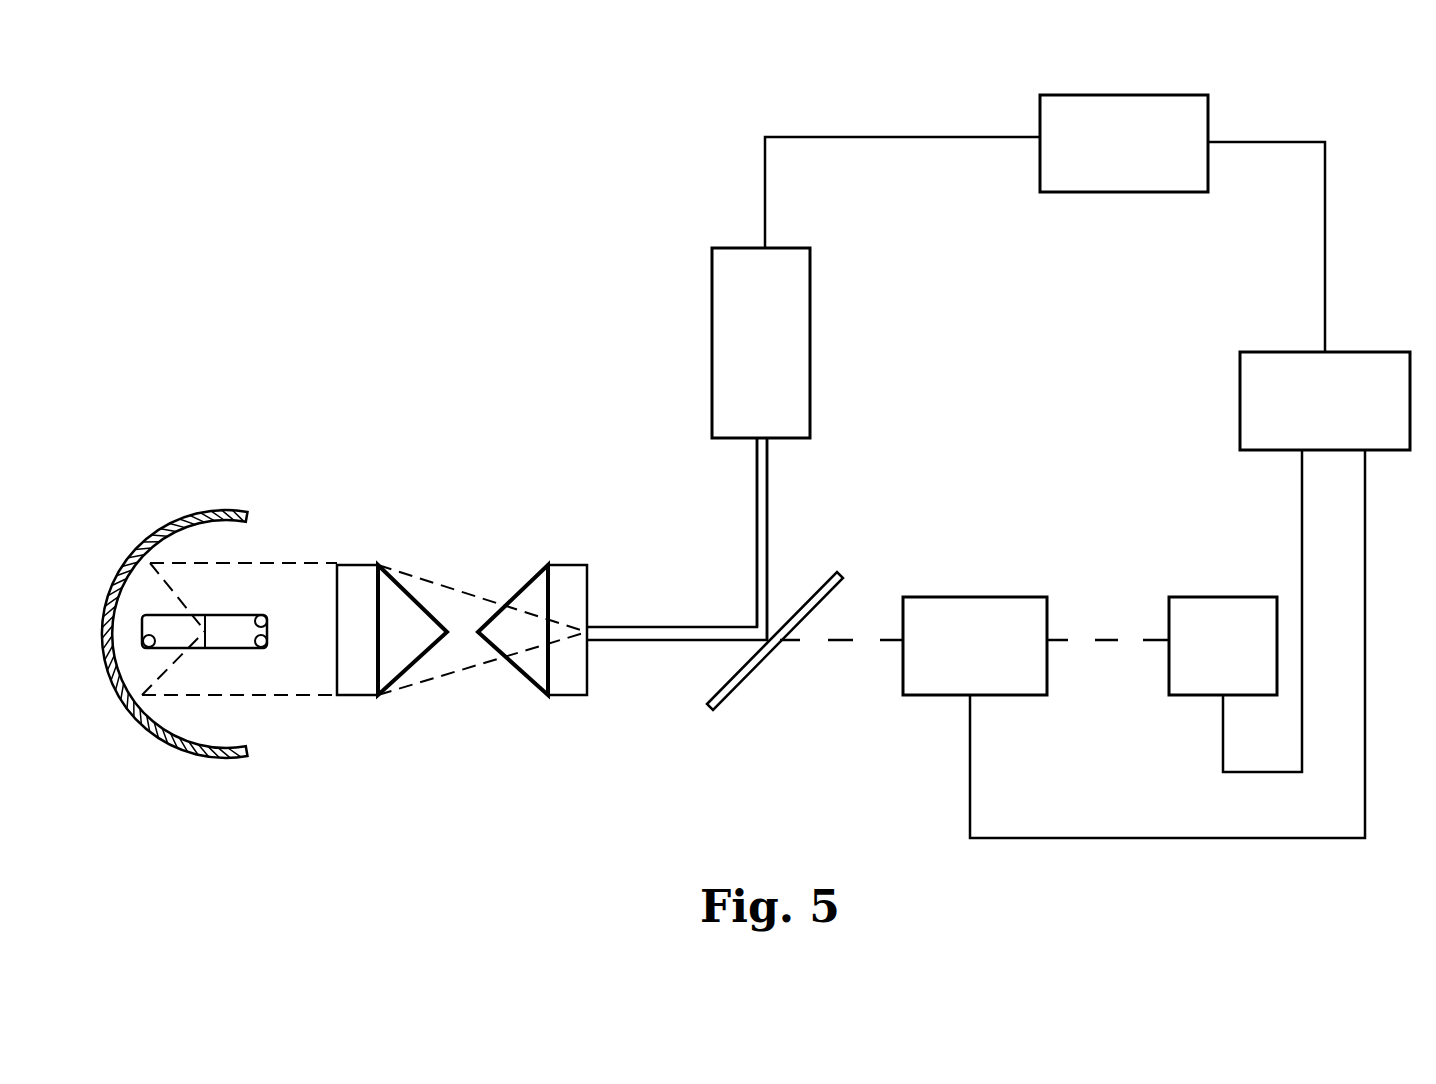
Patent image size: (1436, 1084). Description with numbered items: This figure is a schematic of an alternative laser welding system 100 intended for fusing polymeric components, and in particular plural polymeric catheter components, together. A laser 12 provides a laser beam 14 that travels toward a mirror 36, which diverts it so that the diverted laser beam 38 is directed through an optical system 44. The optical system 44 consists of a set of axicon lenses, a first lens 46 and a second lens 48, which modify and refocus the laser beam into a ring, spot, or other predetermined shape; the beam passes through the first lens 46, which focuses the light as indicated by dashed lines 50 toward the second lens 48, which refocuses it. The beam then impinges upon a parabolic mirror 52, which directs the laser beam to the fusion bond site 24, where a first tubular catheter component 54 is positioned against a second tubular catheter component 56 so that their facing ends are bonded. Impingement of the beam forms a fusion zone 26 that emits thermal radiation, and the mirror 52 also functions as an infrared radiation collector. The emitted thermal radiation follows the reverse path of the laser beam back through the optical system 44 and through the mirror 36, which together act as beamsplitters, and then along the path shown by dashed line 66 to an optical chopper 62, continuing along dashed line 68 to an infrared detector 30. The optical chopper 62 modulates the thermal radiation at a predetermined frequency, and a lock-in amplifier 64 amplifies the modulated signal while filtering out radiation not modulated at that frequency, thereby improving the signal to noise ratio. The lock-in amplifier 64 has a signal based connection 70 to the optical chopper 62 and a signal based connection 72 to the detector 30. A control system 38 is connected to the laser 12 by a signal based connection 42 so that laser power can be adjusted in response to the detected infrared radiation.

The welding system 100 is at (406, 278).
The laser 12 is at (739, 352).
The signal based connection 42 is at (914, 136).
The control system 38 is at (1111, 159).
The laser beam 14 is at (770, 557).
The lock-in amplifier 64 is at (1311, 416).
The mirror 36 is at (742, 683).
The dashed line 66 is at (845, 644).
The optical chopper 62 is at (956, 664).
The dashed line 68 is at (1100, 645).
The detector 30 is at (1206, 664).
The signal based connection 72 is at (1300, 535).
The signal based connection 70 is at (1365, 805).
The second lens 48 is at (361, 578).
The first lens 46 is at (567, 578).
The dashed lines 50 is at (442, 581).
The optical system 44 is at (474, 752).
The mirror 52 is at (188, 748).
The fusion bond site 24 is at (213, 648).
The fusion zone 26 is at (212, 628).
The second tubular catheter component 56 is at (173, 624).
The first tubular catheter component 54 is at (253, 643).